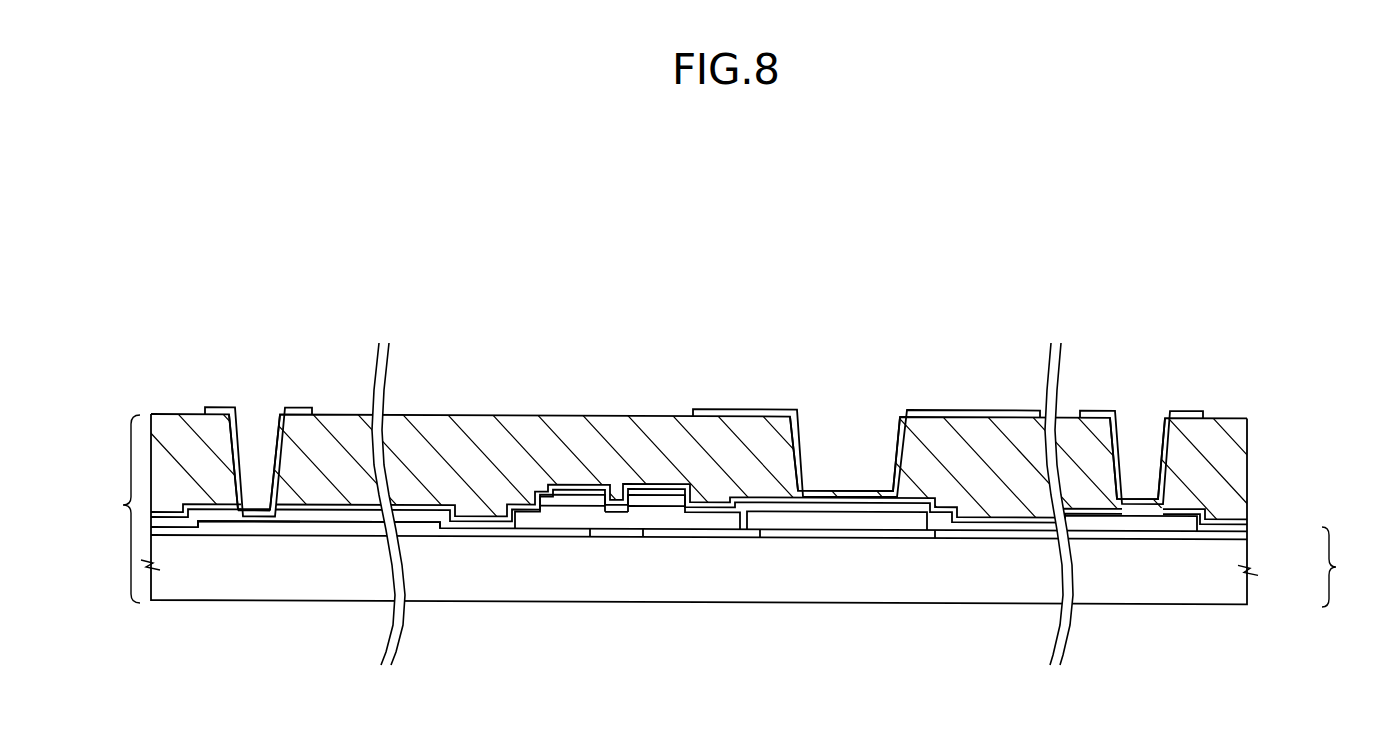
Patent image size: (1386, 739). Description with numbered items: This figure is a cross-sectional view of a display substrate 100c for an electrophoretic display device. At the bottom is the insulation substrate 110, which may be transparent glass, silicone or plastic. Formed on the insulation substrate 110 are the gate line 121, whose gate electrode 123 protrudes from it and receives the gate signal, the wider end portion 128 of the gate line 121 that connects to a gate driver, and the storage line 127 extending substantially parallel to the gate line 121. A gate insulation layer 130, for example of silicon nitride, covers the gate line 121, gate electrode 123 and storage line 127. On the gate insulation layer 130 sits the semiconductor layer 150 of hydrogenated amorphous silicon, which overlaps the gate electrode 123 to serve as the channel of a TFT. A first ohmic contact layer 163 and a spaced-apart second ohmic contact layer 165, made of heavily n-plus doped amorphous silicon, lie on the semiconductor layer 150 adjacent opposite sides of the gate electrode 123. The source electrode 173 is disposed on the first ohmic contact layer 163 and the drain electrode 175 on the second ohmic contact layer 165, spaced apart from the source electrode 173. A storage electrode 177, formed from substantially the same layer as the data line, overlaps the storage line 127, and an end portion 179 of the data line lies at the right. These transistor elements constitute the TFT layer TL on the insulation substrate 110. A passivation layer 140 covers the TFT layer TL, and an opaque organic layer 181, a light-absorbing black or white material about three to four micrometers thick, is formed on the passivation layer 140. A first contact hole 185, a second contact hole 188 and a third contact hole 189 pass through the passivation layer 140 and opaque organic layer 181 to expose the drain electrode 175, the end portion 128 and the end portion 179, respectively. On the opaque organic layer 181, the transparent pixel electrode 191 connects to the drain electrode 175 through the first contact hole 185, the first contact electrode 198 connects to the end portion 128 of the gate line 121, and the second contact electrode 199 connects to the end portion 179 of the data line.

The insulation substrate 110 is at (1243, 583).
The gate line 121 is at (420, 531).
The gate electrode 123 is at (617, 532).
The storage line 127 is at (860, 532).
The end portion 128 is at (245, 530).
The gate insulation layer 130 is at (1243, 531).
The passivation layer 140 is at (1247, 521).
The semiconductor layer 150 is at (628, 512).
The first ohmic contact layer 163 is at (562, 515).
The second ohmic contact layer 165 is at (670, 515).
The source electrode 173 is at (523, 517).
The drain electrode 175 is at (703, 518).
The storage electrode 177 is at (805, 513).
The end portion 179 is at (1175, 519).
The opaque organic layer 181 is at (1243, 466).
The first contact hole 185 is at (857, 448).
The second contact hole 188 is at (265, 445).
The third contact hole 189 is at (1147, 446).
The pixel electrode 191 is at (733, 411).
The first contact electrode 198 is at (213, 407).
The second contact electrode 199 is at (1190, 411).
The display substrate 100c is at (108, 509).
The TFT layer TL is at (1342, 567).